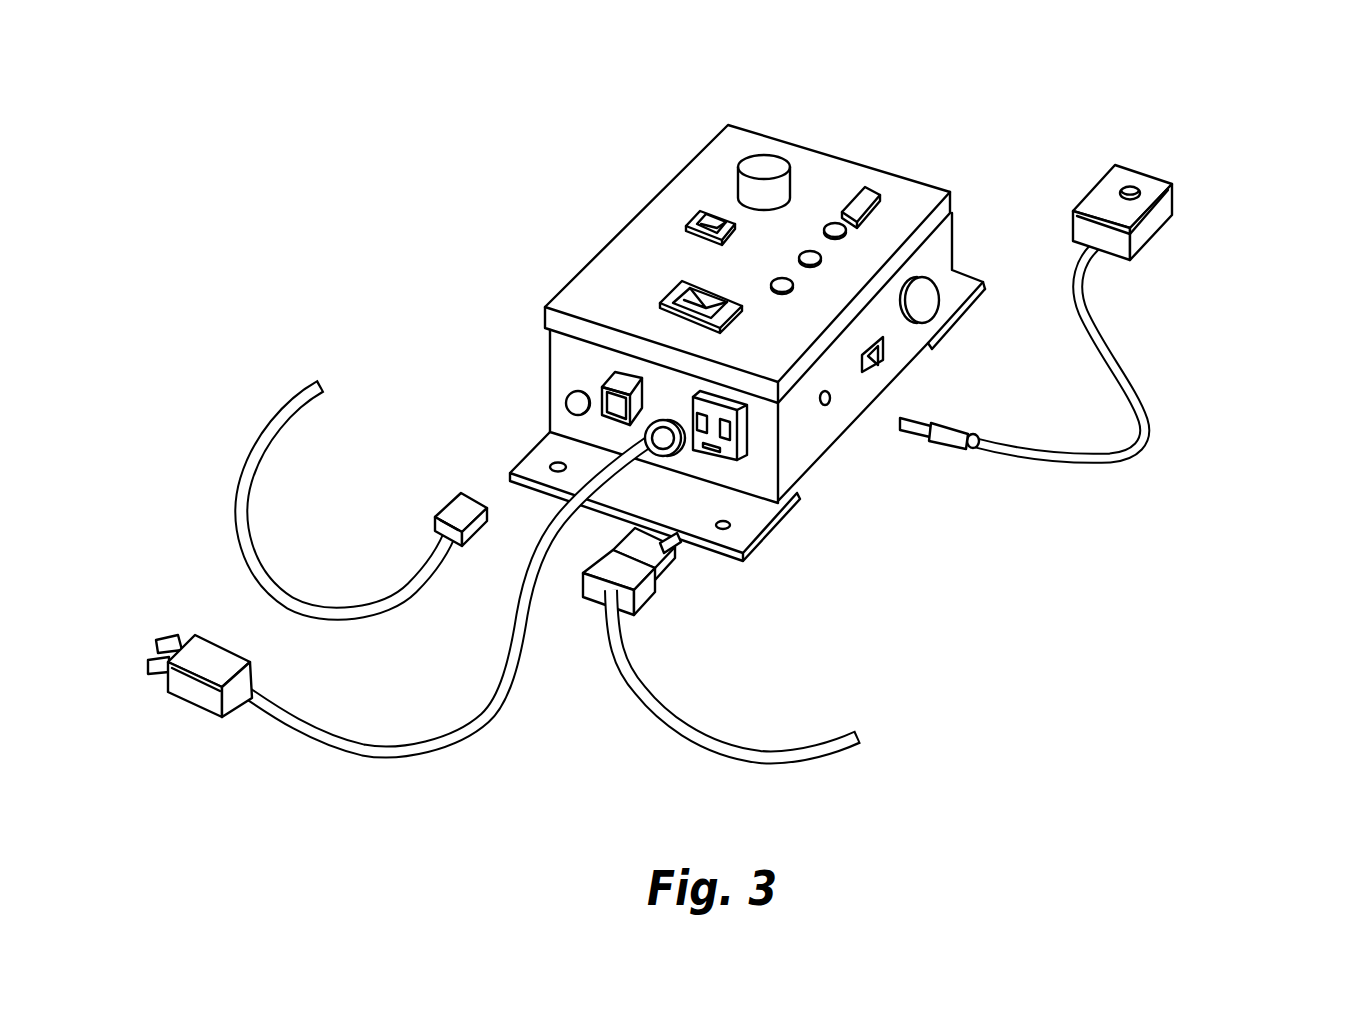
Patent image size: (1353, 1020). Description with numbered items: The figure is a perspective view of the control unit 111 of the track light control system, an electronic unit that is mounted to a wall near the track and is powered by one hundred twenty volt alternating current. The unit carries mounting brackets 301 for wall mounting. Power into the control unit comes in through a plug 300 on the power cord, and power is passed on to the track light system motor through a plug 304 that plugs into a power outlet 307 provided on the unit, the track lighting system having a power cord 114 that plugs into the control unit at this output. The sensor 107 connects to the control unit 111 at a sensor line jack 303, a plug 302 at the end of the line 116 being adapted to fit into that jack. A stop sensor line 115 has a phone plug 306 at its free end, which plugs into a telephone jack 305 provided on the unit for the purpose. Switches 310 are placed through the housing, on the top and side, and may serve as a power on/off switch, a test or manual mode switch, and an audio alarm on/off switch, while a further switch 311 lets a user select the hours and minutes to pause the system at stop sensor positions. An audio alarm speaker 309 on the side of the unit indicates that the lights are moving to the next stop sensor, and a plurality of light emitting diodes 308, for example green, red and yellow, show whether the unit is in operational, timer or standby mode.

The control unit 111 is at (440, 222).
The sensor 107 is at (1172, 200).
The power cord 114 is at (688, 752).
The stop sensor line 115 is at (267, 467).
The line 116 is at (1126, 384).
The plug 300 is at (213, 632).
The mounting brackets 301 is at (720, 557).
The plug 302 is at (930, 437).
The sensor line jack 303 is at (832, 400).
The plug 304 is at (653, 595).
The telephone jack 305 is at (600, 383).
The phone plug 306 is at (450, 498).
The power outlet 307 is at (748, 441).
The light emitting diodes 308 is at (858, 249).
The audio alarm speaker 309 is at (942, 292).
The switches 310 is at (670, 296).
The switch 311 is at (762, 152).